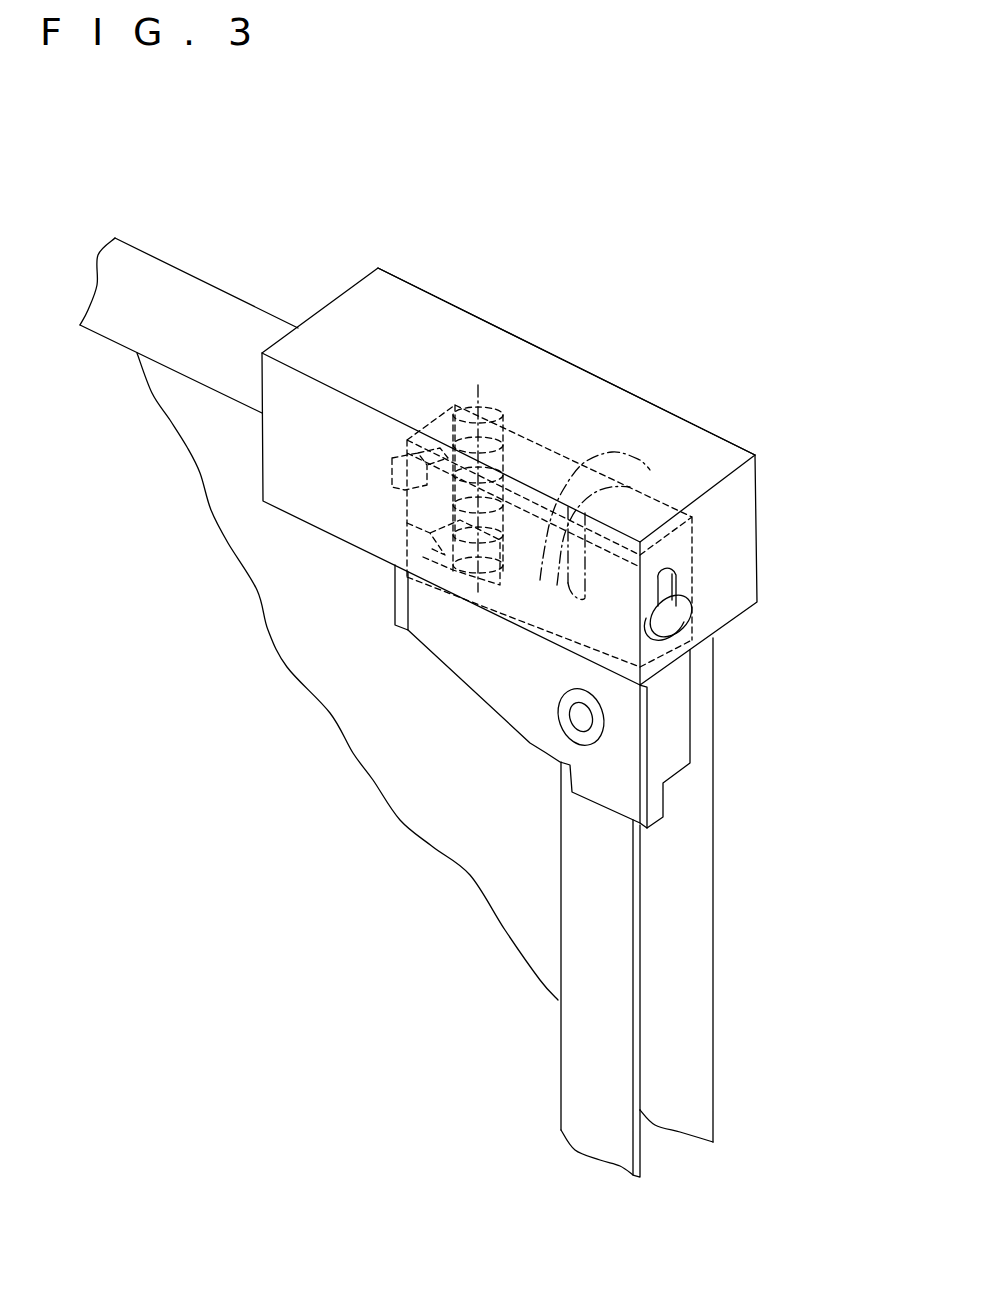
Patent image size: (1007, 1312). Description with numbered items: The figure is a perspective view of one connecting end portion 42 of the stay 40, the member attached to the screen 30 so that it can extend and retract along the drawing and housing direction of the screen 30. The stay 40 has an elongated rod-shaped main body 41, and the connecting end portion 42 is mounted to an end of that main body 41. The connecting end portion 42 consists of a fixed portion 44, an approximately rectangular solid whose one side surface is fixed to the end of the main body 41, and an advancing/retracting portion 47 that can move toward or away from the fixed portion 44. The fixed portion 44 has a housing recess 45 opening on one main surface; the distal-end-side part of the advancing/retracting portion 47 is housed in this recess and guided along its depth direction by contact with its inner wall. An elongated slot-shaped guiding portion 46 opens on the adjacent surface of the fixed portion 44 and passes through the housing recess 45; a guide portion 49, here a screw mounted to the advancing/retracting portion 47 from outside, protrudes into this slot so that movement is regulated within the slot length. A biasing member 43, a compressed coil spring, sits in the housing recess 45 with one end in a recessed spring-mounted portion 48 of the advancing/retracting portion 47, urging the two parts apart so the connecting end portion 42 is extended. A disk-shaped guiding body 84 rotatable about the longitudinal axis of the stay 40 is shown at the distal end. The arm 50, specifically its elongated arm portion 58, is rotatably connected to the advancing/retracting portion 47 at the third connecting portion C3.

The screen 30 is at (714, 835).
The stay 40 is at (311, 270).
The main body 41 is at (187, 270).
The connecting end portion 42 is at (437, 281).
The biasing member 43 is at (473, 407).
The fixed portion 44 is at (722, 432).
The housing recess 45 is at (404, 457).
The guiding portion 46 is at (676, 578).
The advancing/retracting portion 47 is at (470, 690).
The spring-mounted portion 48 is at (409, 522).
The guide portion 49 is at (686, 622).
The arm 50 is at (567, 862).
The arm portion 58 is at (442, 969).
The guiding body 84 is at (600, 452).
The third connecting portion C3 is at (558, 706).